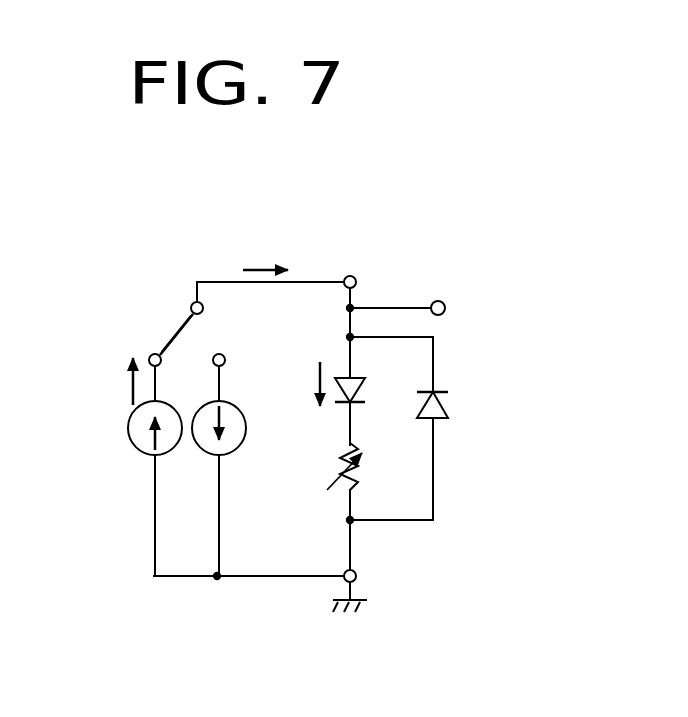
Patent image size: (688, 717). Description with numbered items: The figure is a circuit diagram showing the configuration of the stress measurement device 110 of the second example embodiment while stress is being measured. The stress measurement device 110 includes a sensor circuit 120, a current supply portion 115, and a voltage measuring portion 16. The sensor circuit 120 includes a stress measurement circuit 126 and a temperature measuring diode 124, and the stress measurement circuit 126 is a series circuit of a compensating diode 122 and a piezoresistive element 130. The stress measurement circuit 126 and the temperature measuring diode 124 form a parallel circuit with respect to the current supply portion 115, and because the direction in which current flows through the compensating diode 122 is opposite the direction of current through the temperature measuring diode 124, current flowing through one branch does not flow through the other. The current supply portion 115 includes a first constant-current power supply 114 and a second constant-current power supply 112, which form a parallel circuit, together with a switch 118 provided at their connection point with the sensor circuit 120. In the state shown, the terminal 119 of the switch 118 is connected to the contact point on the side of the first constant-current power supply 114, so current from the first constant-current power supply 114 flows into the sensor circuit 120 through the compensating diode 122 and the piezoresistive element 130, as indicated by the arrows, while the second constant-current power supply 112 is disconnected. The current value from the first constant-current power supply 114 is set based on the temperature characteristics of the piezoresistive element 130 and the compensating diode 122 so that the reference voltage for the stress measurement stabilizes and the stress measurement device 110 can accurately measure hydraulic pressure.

The stress measurement device 110 is at (431, 235).
The current supply portion 115 is at (188, 587).
The terminal 119 is at (182, 328).
The switch 118 is at (167, 330).
The first constant-current power supply 114 is at (127, 428).
The second constant-current power supply 112 is at (234, 403).
The voltage measuring portion 16 is at (445, 308).
The compensating diode 122 is at (342, 374).
The piezoresistive element 130 is at (340, 470).
The stress measurement circuit 126 is at (340, 433).
The sensor circuit 120 is at (433, 544).
The temperature measuring diode 124 is at (450, 402).